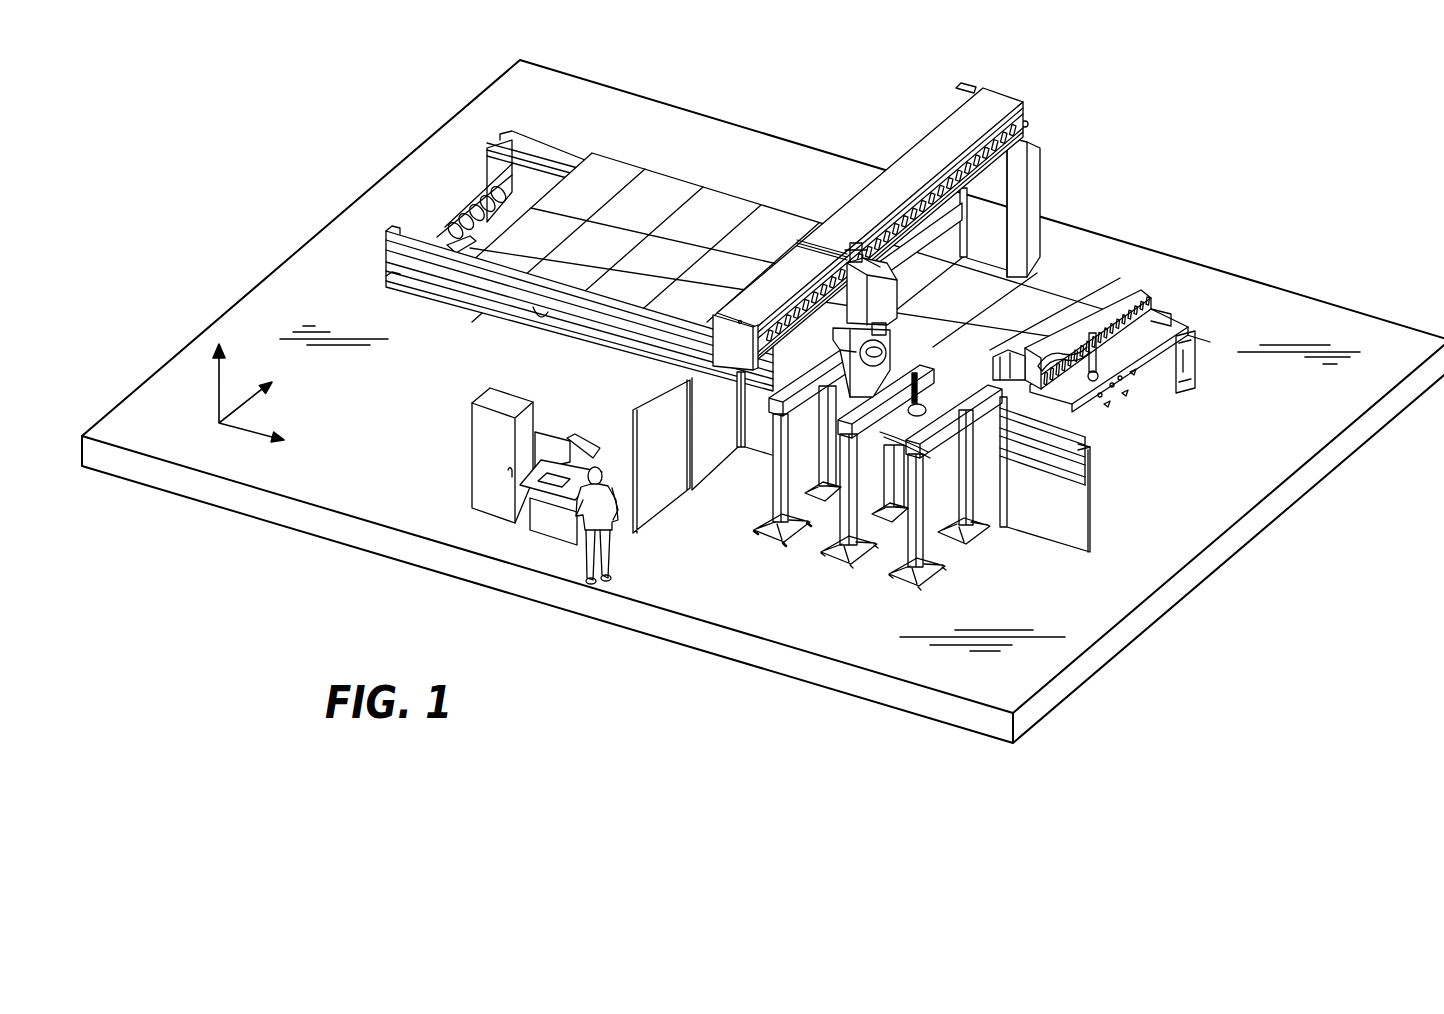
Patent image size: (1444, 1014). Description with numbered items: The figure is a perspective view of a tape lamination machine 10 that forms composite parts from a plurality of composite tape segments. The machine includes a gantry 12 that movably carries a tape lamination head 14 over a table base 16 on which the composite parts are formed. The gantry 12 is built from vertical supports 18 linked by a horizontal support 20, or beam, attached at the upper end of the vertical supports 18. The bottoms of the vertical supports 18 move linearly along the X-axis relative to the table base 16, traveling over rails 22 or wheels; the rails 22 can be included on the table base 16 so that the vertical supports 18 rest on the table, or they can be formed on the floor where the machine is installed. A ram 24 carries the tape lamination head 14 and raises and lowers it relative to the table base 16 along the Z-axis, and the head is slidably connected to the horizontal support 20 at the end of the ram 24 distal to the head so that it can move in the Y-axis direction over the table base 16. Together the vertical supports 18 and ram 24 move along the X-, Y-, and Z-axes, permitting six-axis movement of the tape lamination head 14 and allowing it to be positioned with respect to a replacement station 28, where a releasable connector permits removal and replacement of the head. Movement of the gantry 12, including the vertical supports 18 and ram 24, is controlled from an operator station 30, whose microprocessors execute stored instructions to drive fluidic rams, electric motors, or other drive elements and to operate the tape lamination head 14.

The tape lamination machine 10 is at (1250, 185).
The gantry 12 is at (910, 229).
The tape lamination head 14 is at (905, 333).
The table base 16 is at (678, 166).
The vertical supports 18 is at (1029, 198).
The horizontal support 20 is at (931, 116).
The rails 22 is at (455, 273).
The ram 24 is at (909, 266).
The replacement station 28 is at (978, 553).
The operator station 30 is at (567, 533).